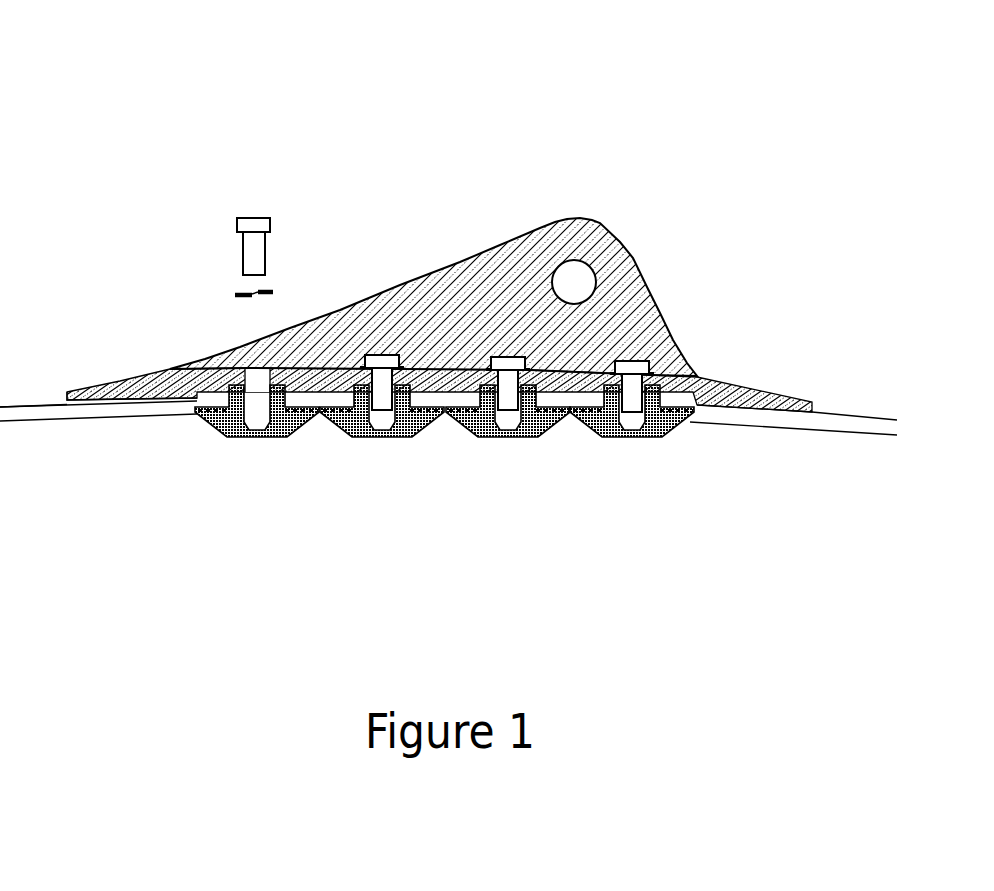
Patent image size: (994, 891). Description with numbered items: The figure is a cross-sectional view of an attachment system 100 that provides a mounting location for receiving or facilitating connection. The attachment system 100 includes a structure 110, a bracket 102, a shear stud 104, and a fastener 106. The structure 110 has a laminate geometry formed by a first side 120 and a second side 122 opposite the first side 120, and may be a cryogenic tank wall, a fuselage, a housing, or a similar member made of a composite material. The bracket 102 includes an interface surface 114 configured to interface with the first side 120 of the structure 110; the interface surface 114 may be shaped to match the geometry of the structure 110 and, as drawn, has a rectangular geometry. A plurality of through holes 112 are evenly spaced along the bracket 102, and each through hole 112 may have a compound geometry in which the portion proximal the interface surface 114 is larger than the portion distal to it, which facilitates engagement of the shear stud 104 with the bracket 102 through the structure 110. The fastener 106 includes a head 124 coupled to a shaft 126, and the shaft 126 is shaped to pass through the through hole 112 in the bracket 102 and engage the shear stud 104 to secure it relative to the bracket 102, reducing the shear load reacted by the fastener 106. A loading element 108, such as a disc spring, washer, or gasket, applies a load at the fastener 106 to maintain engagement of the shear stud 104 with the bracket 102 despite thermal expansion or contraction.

The attachment system 100 is at (139, 54).
The bracket 102 is at (542, 212).
The shear stud 104 is at (233, 438).
The fastener 106 is at (219, 228).
The loading element 108 is at (235, 293).
The structure 110 is at (43, 432).
The through hole 112 is at (248, 362).
The interface surface 114 is at (83, 416).
The first side 120 is at (37, 402).
The second side 122 is at (173, 412).
The head 124 is at (257, 218).
The shaft 126 is at (265, 253).